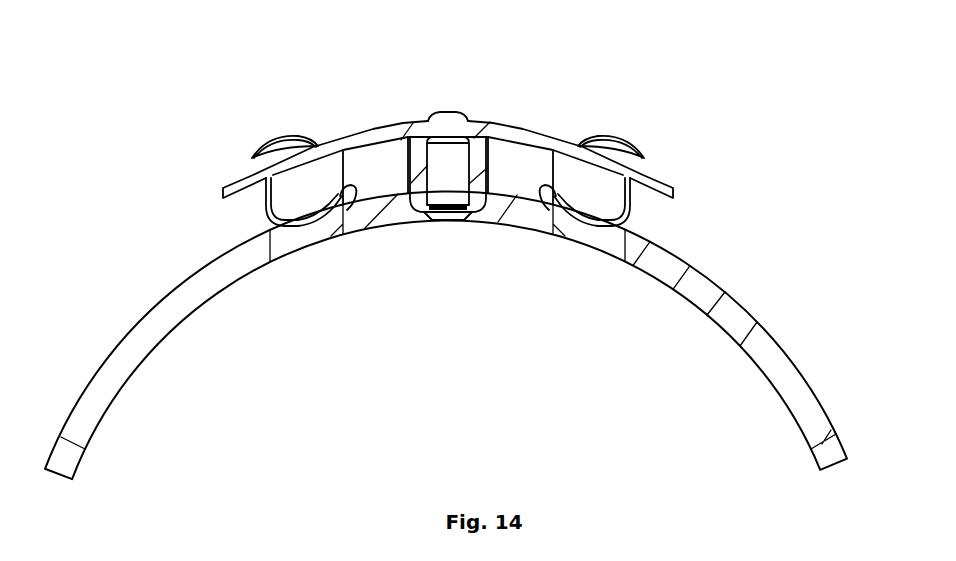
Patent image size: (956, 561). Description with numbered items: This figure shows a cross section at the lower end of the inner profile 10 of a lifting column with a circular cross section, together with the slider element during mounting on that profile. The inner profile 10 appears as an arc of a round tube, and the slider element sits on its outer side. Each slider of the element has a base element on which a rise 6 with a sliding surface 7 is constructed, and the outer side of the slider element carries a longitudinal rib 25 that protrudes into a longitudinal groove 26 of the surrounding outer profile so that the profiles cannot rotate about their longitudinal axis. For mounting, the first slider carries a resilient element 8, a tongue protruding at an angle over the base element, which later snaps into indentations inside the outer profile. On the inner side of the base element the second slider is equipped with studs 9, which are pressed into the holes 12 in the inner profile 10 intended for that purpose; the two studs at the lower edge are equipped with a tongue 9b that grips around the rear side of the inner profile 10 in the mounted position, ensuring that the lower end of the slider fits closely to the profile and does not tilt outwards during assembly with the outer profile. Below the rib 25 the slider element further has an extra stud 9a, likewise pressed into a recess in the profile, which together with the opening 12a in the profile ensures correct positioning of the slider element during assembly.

The rise 6 is at (373, 136).
The sliding surface 7 is at (386, 125).
The resilient element 8 is at (261, 143).
The studs 9 is at (298, 203).
The extra stud 9a is at (455, 187).
The tongue 9b is at (343, 212).
The inner profile 10 is at (716, 258).
The holes 12 is at (285, 242).
The band slot 12a is at (420, 213).
The longitudinal rib 25 is at (452, 101).
The longitudinal groove 26 is at (446, 222).